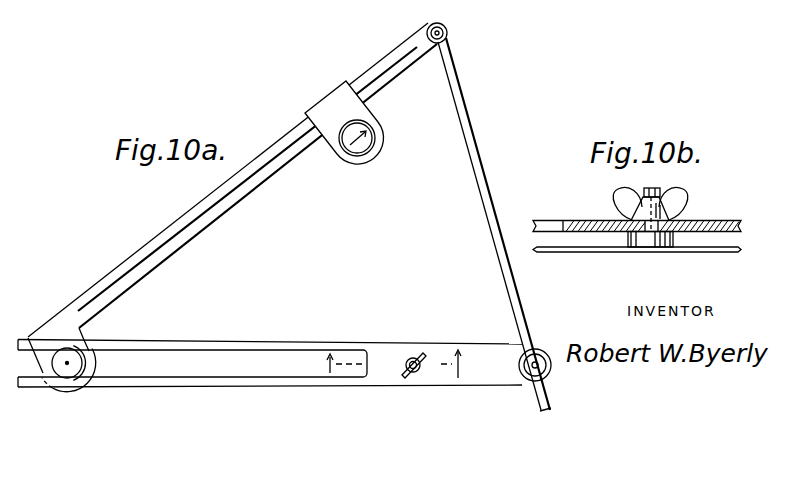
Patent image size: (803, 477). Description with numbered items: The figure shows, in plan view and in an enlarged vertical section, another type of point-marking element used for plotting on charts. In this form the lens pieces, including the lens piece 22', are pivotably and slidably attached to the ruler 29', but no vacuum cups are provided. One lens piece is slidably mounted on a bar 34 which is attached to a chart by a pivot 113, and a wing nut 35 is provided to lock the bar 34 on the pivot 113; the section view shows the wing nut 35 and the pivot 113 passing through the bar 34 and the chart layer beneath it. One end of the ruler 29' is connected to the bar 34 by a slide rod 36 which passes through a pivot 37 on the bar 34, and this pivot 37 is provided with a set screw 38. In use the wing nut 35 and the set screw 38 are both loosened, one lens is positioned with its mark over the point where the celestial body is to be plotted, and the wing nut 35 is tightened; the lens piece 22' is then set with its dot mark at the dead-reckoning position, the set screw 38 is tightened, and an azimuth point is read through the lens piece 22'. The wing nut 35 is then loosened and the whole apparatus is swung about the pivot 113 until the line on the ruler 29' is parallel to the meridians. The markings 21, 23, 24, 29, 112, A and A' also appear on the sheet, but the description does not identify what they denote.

In FIG. 10A, the pivot pin 21 is at (80, 350).
In FIG. 10A, the lens piece 22' is at (362, 135).
In FIG. 10A, the arm (upper figure) 23 is at (66, 0).
In FIG. 10A, the pivot 24 is at (422, 21).
In FIG. 10A, the arm (upper figure) 29 is at (179, 18).
In FIG. 10A, the ruler 29' is at (232, 187).
In FIG. 10A, the bar 34 is at (285, 345).
In FIG. 10A, the wing nut 35 is at (415, 357).
In FIG. 10B, the wing nut 35 is at (680, 203).
In FIG. 10A, the slide rod 36 is at (471, 122).
In FIG. 10A, the pivot 37 is at (530, 375).
In FIG. 10A, the set screw 38 is at (525, 355).
In FIG. 10A, the member (upper figure) 112 is at (273, 11).
In FIG. 10B, the pivot 113 is at (653, 232).
In FIG. 10B, the plate A is at (637, 255).
In FIG. 10A, the plate (upper figure) A' is at (345, 10).